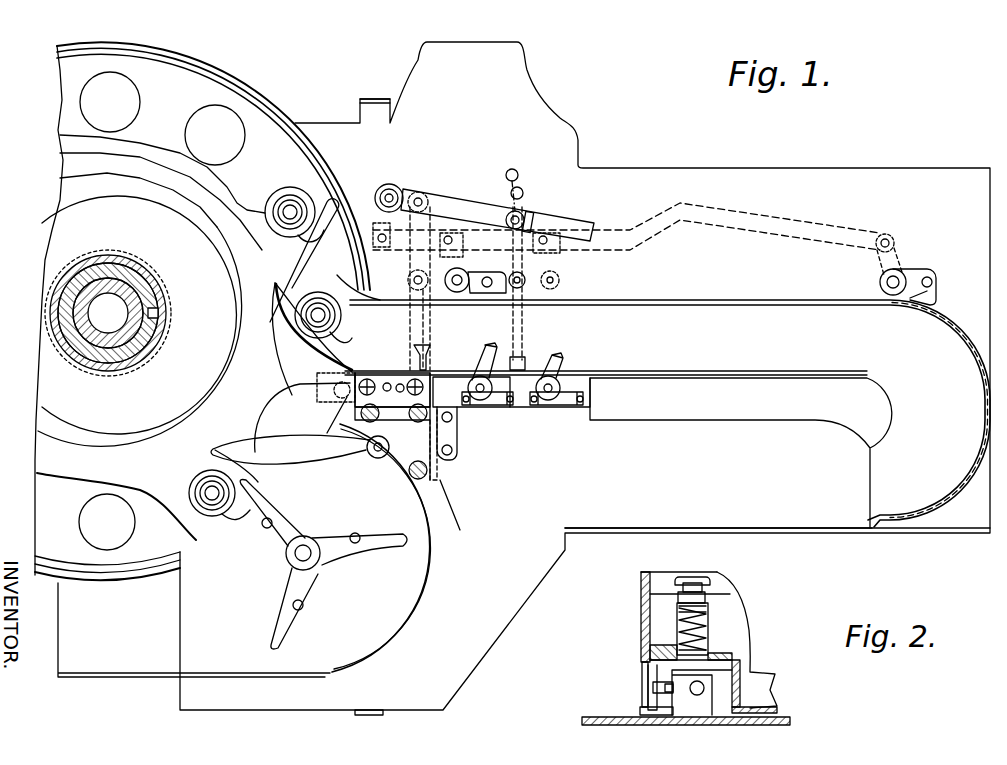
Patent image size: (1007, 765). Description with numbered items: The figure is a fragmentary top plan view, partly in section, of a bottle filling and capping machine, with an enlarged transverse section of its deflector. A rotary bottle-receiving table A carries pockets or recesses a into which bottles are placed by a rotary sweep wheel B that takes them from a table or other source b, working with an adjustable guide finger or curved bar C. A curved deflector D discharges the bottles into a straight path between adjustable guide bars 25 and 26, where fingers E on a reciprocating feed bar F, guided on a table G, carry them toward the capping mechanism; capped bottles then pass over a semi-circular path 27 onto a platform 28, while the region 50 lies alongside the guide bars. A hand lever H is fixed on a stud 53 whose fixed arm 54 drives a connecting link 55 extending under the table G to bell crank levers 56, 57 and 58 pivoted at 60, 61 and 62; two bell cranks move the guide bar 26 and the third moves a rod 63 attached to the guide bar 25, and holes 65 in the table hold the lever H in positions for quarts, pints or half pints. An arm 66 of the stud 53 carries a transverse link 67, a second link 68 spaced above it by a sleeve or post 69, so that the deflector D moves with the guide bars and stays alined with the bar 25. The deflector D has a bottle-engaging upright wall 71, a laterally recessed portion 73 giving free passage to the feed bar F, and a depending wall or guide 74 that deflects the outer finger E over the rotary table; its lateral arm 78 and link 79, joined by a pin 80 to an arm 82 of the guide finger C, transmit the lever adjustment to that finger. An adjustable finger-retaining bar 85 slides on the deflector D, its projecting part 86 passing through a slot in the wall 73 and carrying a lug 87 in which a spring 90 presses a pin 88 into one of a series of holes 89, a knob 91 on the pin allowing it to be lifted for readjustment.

In FIG. 1, the rotary bottle-receiving table A is at (263, 120).
In FIG. 1, the pockets or recesses a is at (256, 214).
In FIG. 1, the table or other suitable source b is at (151, 634).
In FIG. 1, the rotary sweep wheel or positioning member B is at (333, 530).
In FIG. 1, the guide finger or curved bar C is at (356, 443).
In FIG. 1, the curved deflector D is at (276, 303).
In FIG. 2, the curved deflector D is at (640, 580).
In FIG. 1, the fingers E is at (480, 350).
In FIG. 2, the fingers E is at (658, 683).
In FIG. 1, the reciprocating feed member or bar F is at (517, 410).
In FIG. 2, the reciprocating feed member or bar F is at (660, 712).
In FIG. 1, the table G is at (524, 378).
In FIG. 2, the table G is at (790, 718).
In FIG. 1, the horizontally swinging hand lever H is at (553, 218).
In FIG. 1, the guide bar or plate 25 is at (708, 370).
In FIG. 1, the guide bar or plate 26 is at (734, 300).
In FIG. 1, the semi-circular path 27 is at (949, 412).
In FIG. 1, the platform 28 is at (718, 492).
In FIG. 1, the rail end 50 is at (741, 453).
In FIG. 1, the stud 53 is at (395, 195).
In FIG. 1, the fixed arm 54 is at (374, 203).
In FIG. 1, the connecting link 55 is at (796, 222).
In FIG. 1, the bell crank lever 56 is at (473, 263).
In FIG. 1, the bell crank lever 57 is at (876, 250).
In FIG. 1, the bell crank lever 58 is at (568, 266).
In FIG. 1, the pivot 60 is at (514, 283).
In FIG. 1, the pivot 61 is at (879, 283).
In FIG. 1, the pivot 62 is at (562, 281).
In FIG. 1, the rod 63 is at (525, 322).
In FIG. 1, the holes 65 is at (522, 191).
In FIG. 1, the arm 66 is at (424, 198).
In FIG. 1, the transverse link 67 is at (410, 262).
In FIG. 1, the second link or bar 68 is at (425, 312).
In FIG. 1, the sleeve or post 69 is at (408, 282).
In FIG. 1, the bottle-engaging upright wall 71 is at (296, 282).
In FIG. 2, the bottle-engaging upright wall 71 is at (640, 617).
In FIG. 2, the recessed portion 73 is at (735, 690).
In FIG. 2, the depending wall or guide 74 is at (640, 684).
In FIG. 1, the lateral arm or extension 78 is at (460, 418).
In FIG. 1, the link 79 is at (462, 441).
In FIG. 1, the pin 80 is at (452, 462).
In FIG. 1, the arm 82 is at (440, 495).
In FIG. 1, the adjustable finger-retaining bar 85 is at (370, 350).
In FIG. 2, the adjustable finger-retaining bar 85 is at (656, 697).
In FIG. 2, the projecting part 86 is at (648, 660).
In FIG. 1, the lug or projection 87 is at (345, 400).
In FIG. 2, the lug or projection 87 is at (708, 622).
In FIG. 2, the pin 88 is at (709, 640).
In FIG. 1, the holes 89 is at (398, 384).
In FIG. 2, the holes 89 is at (742, 657).
In FIG. 2, the spring 90 is at (712, 592).
In FIG. 2, the knob or handle 91 is at (692, 578).